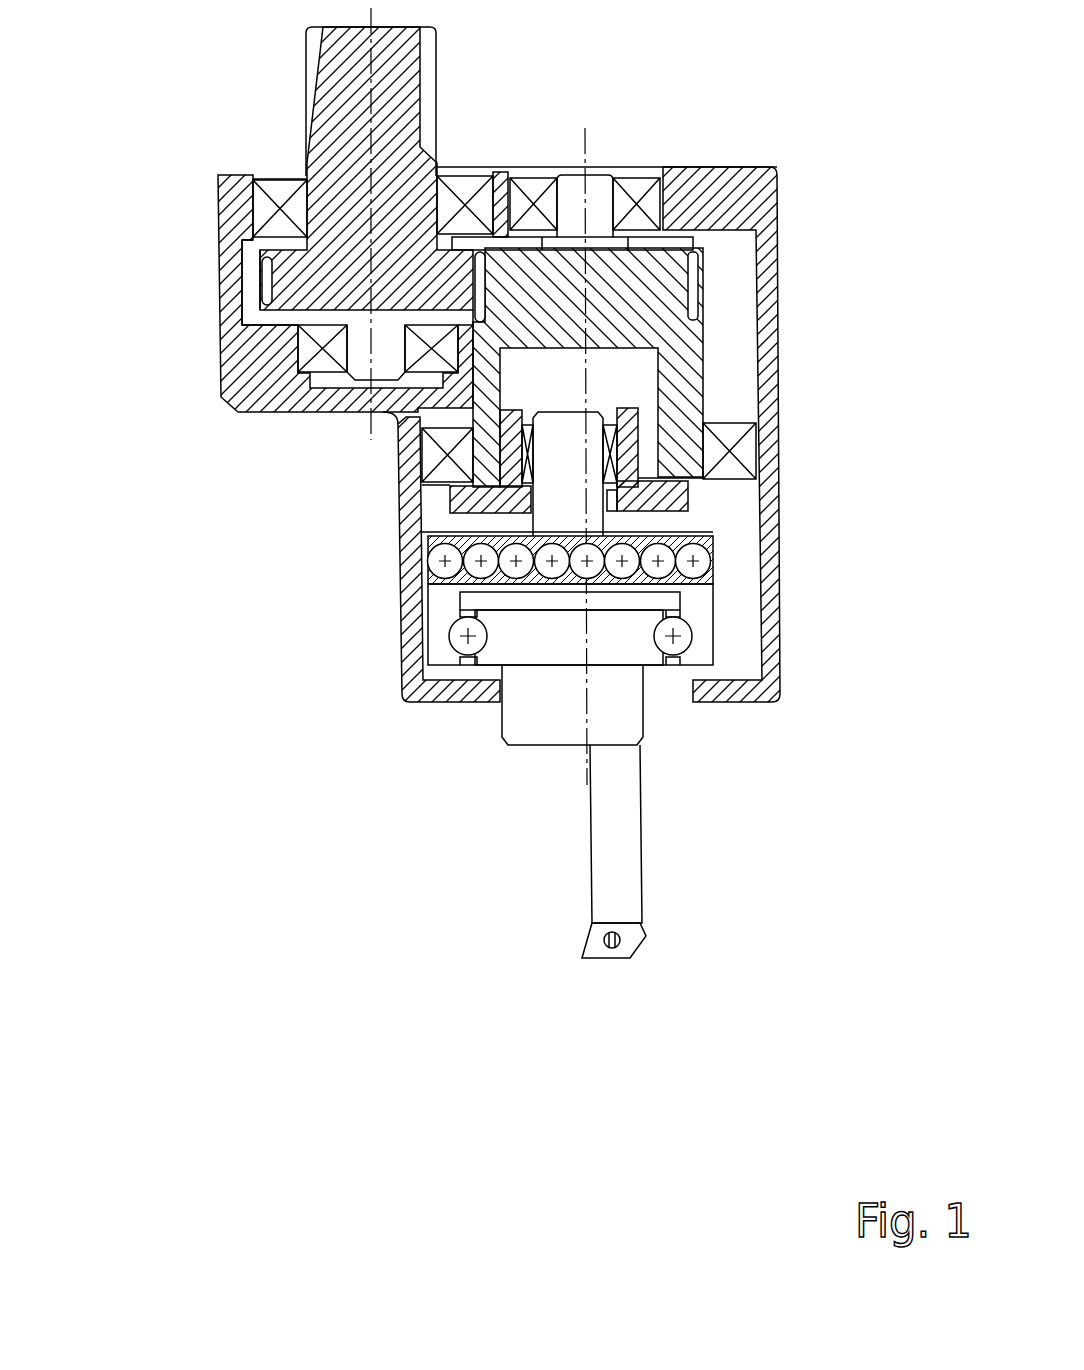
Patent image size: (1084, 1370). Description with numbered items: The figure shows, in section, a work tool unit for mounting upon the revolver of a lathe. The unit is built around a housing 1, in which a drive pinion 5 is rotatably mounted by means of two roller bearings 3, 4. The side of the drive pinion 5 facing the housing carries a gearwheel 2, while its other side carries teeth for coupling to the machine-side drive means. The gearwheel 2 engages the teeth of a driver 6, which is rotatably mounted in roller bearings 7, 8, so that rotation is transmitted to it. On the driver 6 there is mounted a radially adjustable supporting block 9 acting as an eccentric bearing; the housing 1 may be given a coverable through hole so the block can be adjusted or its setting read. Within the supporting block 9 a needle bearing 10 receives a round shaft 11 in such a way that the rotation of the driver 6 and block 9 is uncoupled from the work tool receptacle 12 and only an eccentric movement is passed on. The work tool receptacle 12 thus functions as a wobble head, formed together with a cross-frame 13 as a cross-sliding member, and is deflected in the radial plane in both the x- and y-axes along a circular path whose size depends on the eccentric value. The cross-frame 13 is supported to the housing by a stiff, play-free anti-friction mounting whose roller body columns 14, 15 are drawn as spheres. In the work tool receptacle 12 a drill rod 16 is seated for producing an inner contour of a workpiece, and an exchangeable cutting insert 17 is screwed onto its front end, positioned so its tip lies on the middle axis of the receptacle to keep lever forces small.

The housing 1 is at (768, 682).
The gearwheel 2 is at (310, 282).
The roller bearing 3 is at (263, 212).
The roller bearing 4 is at (308, 353).
The drive pinion 5 is at (342, 99).
The driver 6 is at (645, 275).
The roller bearing 7 is at (653, 202).
The roller bearing 8 is at (450, 471).
The supporting block 9 is at (627, 413).
The needle bearing 10 is at (610, 470).
The round shaft 11 is at (587, 523).
The work tool receptacle 12 is at (527, 723).
The cross-frame 13 is at (700, 612).
The roller body column 14 is at (465, 637).
The roller body column 15 is at (445, 563).
The drill rod 16 is at (615, 849).
The cutting insert 17 is at (593, 952).